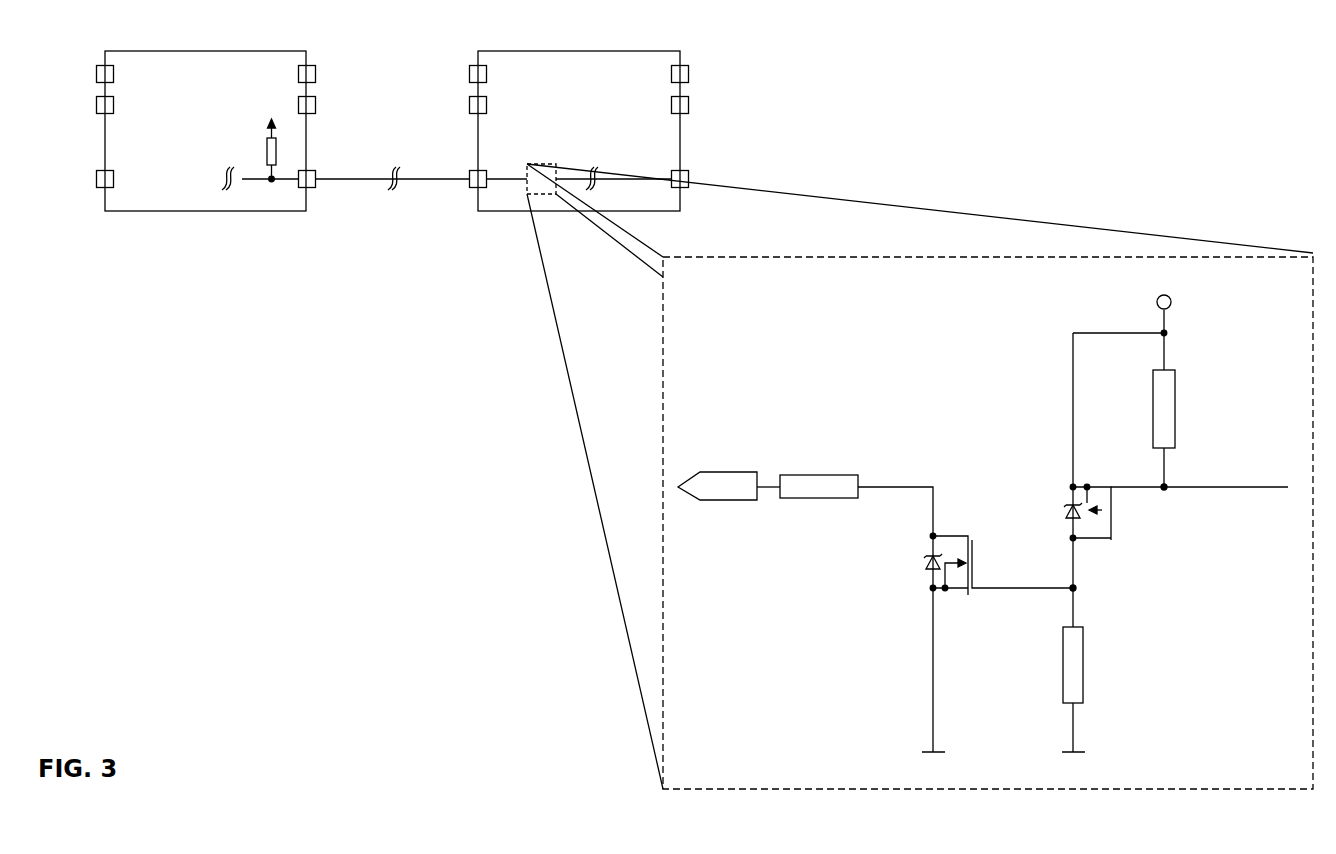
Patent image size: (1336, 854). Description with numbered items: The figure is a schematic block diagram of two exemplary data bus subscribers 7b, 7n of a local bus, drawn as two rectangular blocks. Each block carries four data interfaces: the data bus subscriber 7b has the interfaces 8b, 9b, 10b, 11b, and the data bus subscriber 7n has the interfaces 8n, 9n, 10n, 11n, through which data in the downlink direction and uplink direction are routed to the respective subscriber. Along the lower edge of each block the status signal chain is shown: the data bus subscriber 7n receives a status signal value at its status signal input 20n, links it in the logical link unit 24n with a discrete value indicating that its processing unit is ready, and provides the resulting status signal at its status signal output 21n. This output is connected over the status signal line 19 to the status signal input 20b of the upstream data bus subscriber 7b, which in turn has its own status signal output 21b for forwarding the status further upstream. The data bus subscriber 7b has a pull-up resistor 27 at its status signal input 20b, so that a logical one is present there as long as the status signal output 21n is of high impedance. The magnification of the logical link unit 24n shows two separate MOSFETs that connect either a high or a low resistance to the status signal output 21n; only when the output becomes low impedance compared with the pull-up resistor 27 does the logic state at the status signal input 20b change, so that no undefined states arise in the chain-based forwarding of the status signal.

The data bus subscriber 7b is at (225, 51).
The interface 8b is at (96, 73).
The interface 11b is at (96, 105).
The status signal output 21b is at (103, 197).
The interface 9b is at (316, 74).
The interface 10b is at (316, 105).
The status signal input 20b is at (306, 188).
The pull-up resistor 27 is at (265, 150).
The status signal line 19 is at (392, 197).
The data bus subscriber 7n is at (580, 51).
The interface 8n is at (468, 73).
The interface 11n is at (468, 105).
The status signal output 21n is at (476, 197).
The interface 9n is at (689, 74).
The interface 10n is at (689, 105).
The status signal input 20n is at (680, 188).
The logical link unit 24n is at (545, 163).